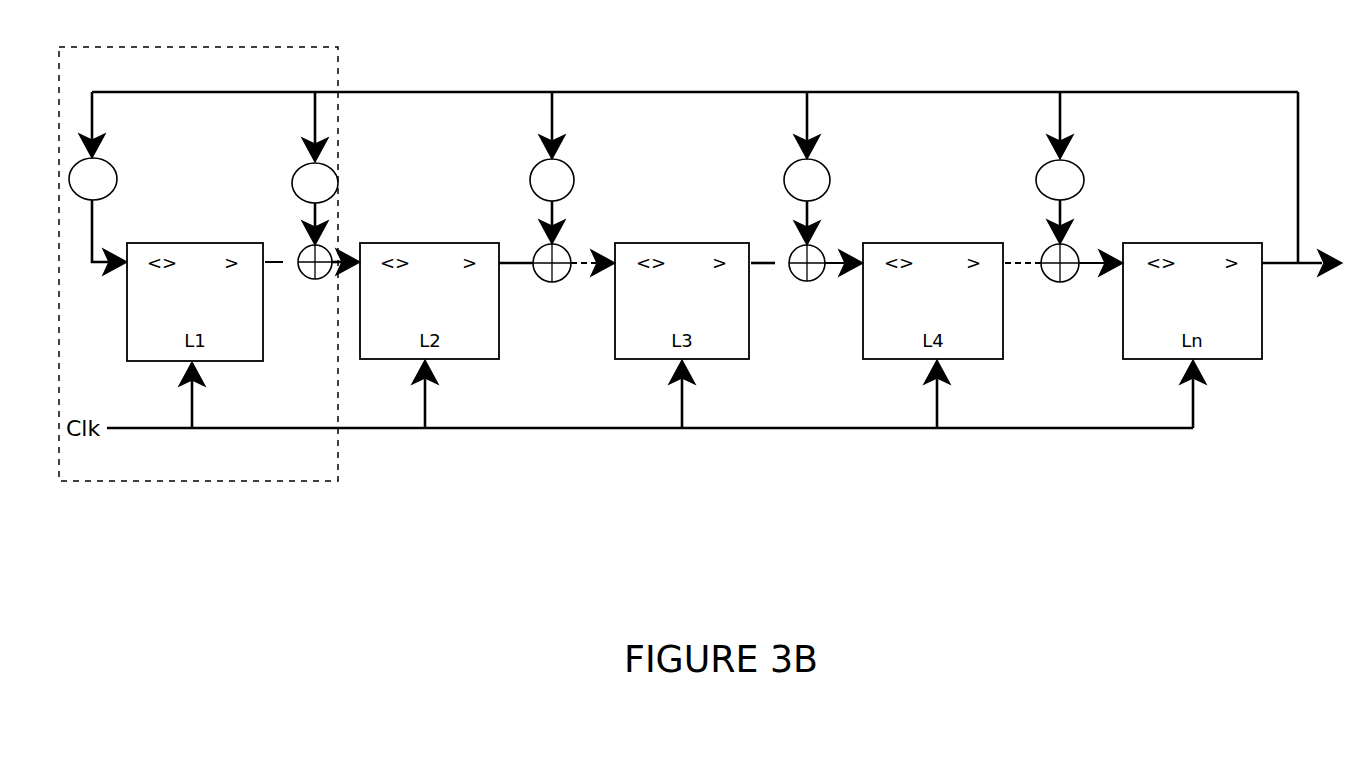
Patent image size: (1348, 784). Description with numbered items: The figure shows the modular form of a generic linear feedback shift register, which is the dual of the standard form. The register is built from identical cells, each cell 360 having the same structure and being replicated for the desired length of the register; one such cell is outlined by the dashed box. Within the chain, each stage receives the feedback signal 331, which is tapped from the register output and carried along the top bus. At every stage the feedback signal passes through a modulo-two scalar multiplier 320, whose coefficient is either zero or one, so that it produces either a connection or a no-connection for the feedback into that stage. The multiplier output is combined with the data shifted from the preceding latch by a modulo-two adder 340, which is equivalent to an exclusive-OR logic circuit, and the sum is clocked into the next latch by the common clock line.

The modulo-2 scalar multiplier 320 is at (280, 168).
The modulo-2 adder 340 is at (552, 285).
The feedback signal 331 is at (1300, 228).
The cell 360 is at (175, 492).